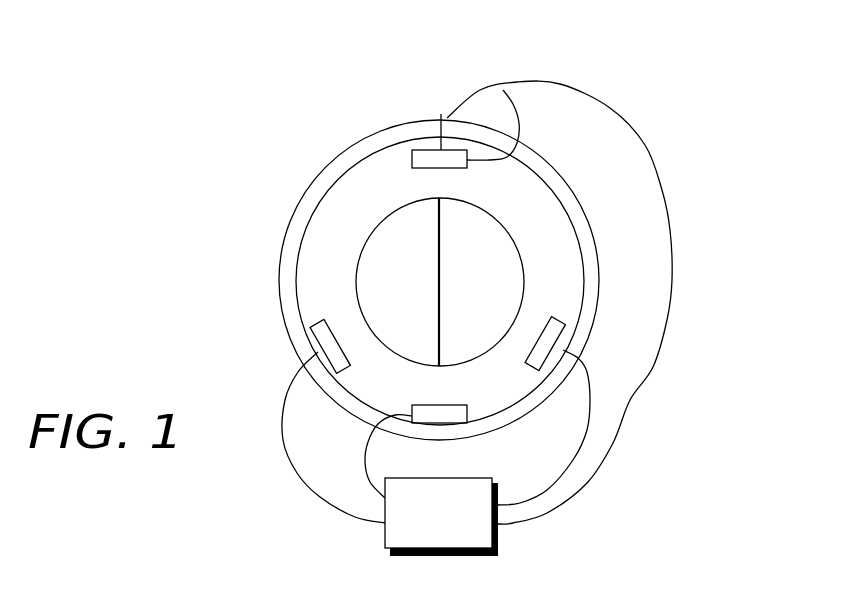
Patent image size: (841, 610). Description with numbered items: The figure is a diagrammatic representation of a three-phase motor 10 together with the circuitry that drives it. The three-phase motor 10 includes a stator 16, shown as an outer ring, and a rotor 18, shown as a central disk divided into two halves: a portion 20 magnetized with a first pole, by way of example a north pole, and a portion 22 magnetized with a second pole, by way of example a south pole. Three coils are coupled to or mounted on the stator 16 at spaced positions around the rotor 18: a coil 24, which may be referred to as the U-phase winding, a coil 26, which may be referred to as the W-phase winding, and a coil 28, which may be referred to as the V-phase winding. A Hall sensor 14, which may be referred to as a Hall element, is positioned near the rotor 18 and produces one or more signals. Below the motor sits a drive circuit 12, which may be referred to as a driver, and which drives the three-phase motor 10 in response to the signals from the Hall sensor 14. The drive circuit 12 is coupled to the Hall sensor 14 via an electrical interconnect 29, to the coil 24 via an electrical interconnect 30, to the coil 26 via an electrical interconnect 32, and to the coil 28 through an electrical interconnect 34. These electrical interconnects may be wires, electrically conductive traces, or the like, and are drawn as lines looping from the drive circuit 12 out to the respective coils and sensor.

The three-phase motor 10 is at (392, 103).
The drive circuit 12 is at (422, 558).
The Hall sensor 14 is at (445, 405).
The stator 16 is at (300, 199).
The rotor 18 is at (386, 212).
The portion magnetized with a first pole 20 is at (533, 233).
The portion magnetized with a second pole 22 is at (323, 265).
The coil 24 is at (313, 322).
The coil 26 is at (557, 315).
The coil 28 is at (512, 148).
The electrical interconnect 29 is at (363, 457).
The electrical interconnect 30 is at (296, 478).
The electrical interconnect 32 is at (567, 462).
The electrical interconnect 34 is at (640, 148).